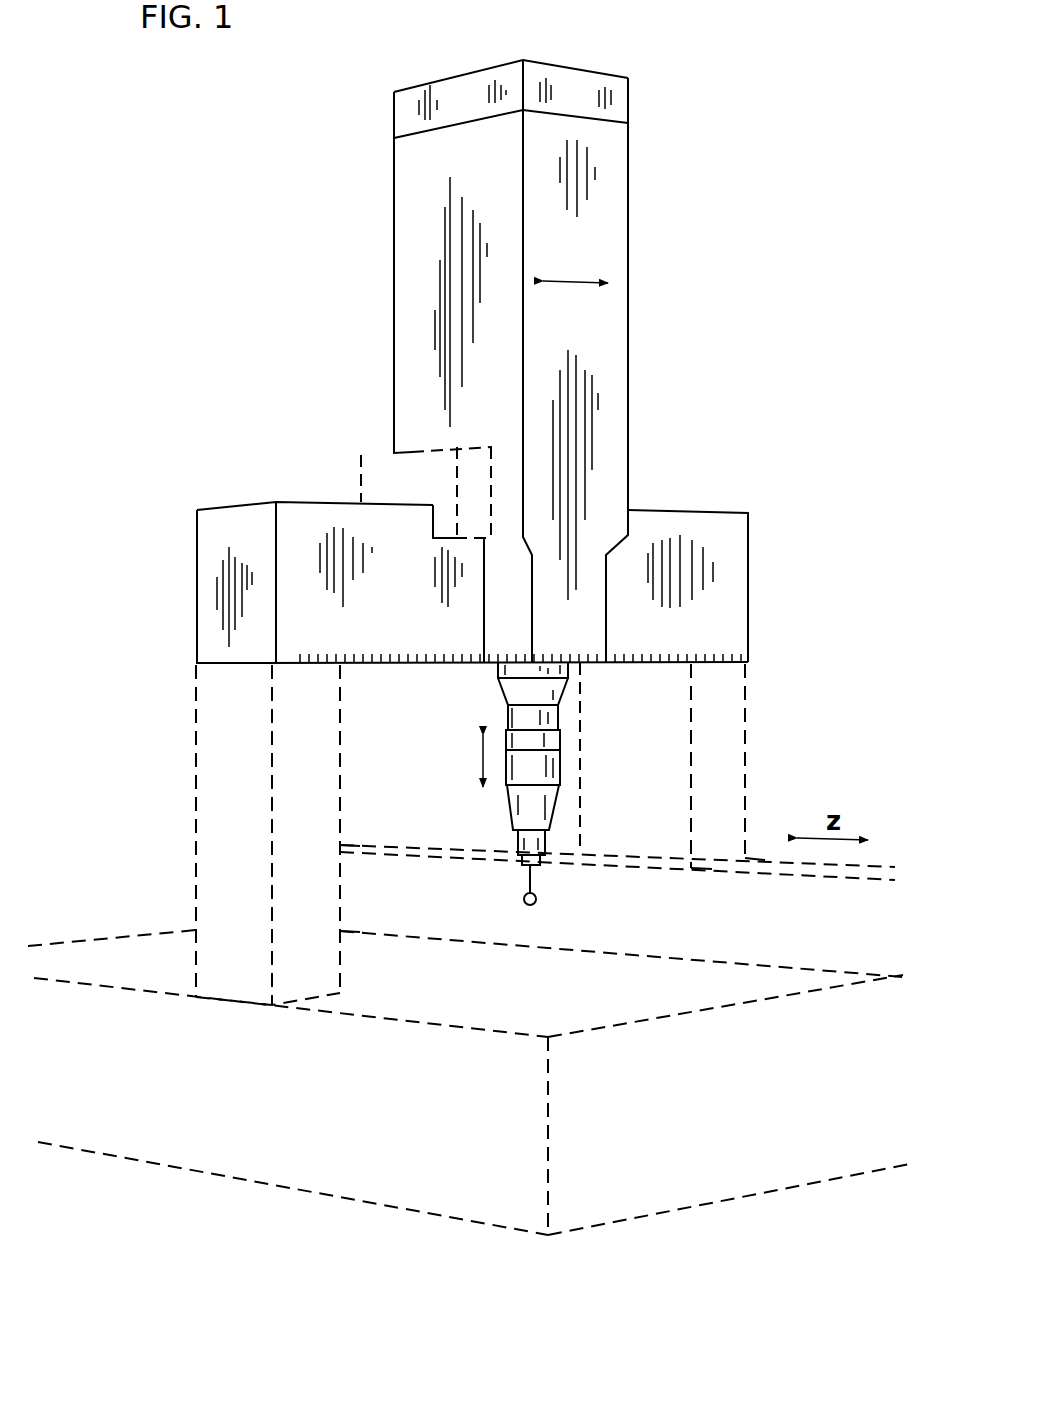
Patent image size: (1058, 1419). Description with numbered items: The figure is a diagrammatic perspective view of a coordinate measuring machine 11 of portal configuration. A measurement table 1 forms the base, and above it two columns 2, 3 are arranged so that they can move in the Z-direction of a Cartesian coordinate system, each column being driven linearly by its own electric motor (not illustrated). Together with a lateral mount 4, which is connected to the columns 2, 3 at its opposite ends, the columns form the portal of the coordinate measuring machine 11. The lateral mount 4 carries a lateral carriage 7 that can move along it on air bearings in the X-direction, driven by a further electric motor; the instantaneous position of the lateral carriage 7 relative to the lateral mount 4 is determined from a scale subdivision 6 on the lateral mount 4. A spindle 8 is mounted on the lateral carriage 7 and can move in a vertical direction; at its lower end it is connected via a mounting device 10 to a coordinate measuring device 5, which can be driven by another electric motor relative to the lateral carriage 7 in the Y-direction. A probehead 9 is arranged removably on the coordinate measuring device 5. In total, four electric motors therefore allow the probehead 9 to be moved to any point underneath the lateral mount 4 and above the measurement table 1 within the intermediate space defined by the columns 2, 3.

The measurement table 1 is at (100, 938).
The column 2 is at (747, 790).
The column 3 is at (195, 768).
The lateral mount 4 is at (242, 506).
The coordinate measuring device 5 is at (508, 785).
The scale subdivision 6 is at (663, 663).
The lateral carriage 7 is at (393, 210).
The spindle 8 is at (553, 672).
The probehead 9 is at (535, 845).
The mounting device 10 is at (510, 728).
The coordinate measuring machine 11 is at (150, 1225).